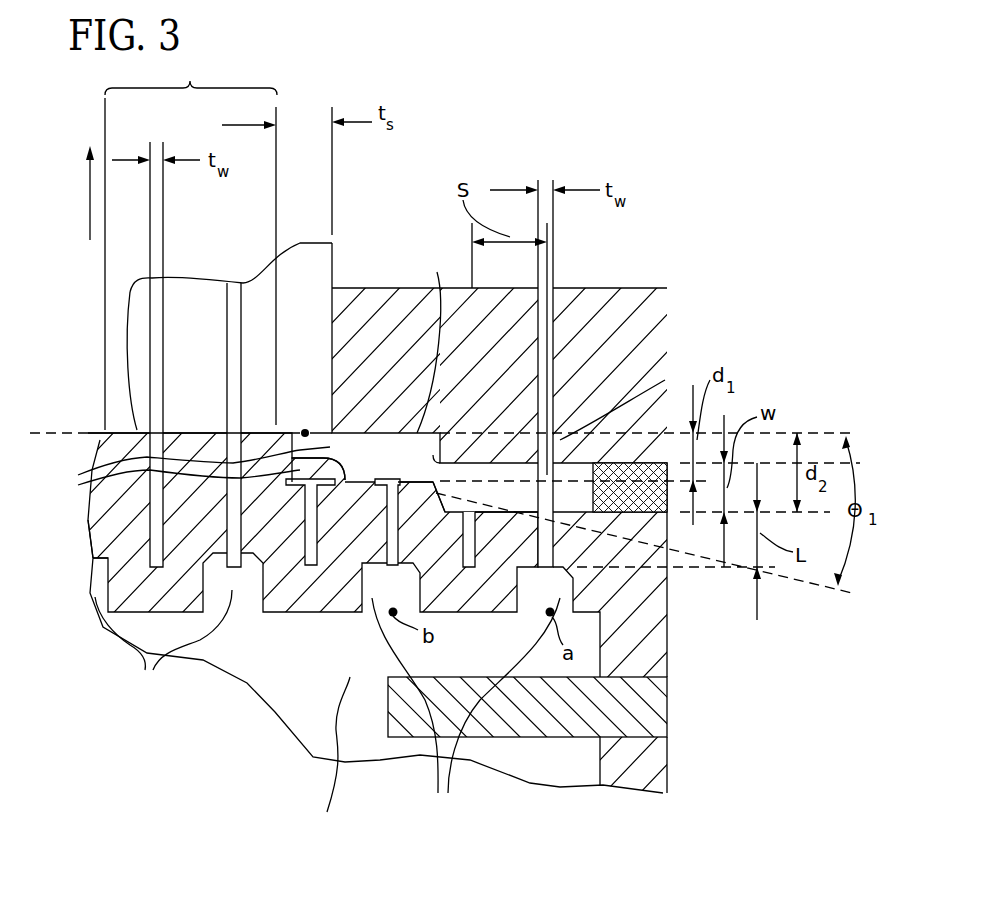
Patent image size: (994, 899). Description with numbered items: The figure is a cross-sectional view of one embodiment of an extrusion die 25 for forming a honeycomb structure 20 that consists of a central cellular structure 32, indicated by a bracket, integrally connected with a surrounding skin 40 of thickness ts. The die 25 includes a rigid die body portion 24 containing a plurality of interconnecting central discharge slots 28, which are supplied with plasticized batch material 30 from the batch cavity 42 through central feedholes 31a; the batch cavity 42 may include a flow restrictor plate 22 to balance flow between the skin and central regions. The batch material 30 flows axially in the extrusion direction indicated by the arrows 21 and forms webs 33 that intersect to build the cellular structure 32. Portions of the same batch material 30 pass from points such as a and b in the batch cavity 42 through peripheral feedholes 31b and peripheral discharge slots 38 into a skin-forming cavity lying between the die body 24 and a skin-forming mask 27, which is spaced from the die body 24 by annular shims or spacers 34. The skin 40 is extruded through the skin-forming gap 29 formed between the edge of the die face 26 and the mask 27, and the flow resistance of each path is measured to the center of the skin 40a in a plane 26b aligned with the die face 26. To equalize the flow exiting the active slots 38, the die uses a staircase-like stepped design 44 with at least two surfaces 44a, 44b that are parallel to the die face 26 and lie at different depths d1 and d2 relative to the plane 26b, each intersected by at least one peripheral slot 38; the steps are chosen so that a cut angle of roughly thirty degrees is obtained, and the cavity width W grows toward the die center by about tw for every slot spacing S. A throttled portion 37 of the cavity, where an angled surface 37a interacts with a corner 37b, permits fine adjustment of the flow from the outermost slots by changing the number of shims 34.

The honeycomb structure 20 is at (363, 203).
The arrows indicating axial extrusion direction 21 is at (88, 200).
The flow restrictor plate 22 is at (663, 708).
The die body portion 24 is at (110, 540).
The die assembly 25 is at (80, 574).
The die face 26 is at (127, 390).
The plane of the die face 26b is at (72, 430).
The skin-forming mask 27 is at (607, 307).
The central discharge slots 28 is at (407, 490).
The skin-forming gap 29 is at (305, 430).
The batch material 30 is at (278, 690).
The central feedholes 31a is at (163, 644).
The peripheral feedholes 31b is at (466, 709).
The central cellular structure 32 is at (191, 243).
The webs 33 is at (157, 307).
The annular shims or spacers 34 is at (645, 490).
The throttled portion 37 is at (307, 605).
The angled surface 37a is at (422, 492).
The corner 37b is at (433, 462).
The peripheral discharge slots 38 is at (522, 535).
The skin 40 is at (307, 268).
The center of the skin 40a is at (320, 450).
The batch cavity 42 is at (326, 755).
The stepped surfaces 44 is at (185, 468).
The first step surface 44a is at (428, 341).
The second step surface 44b is at (665, 380).